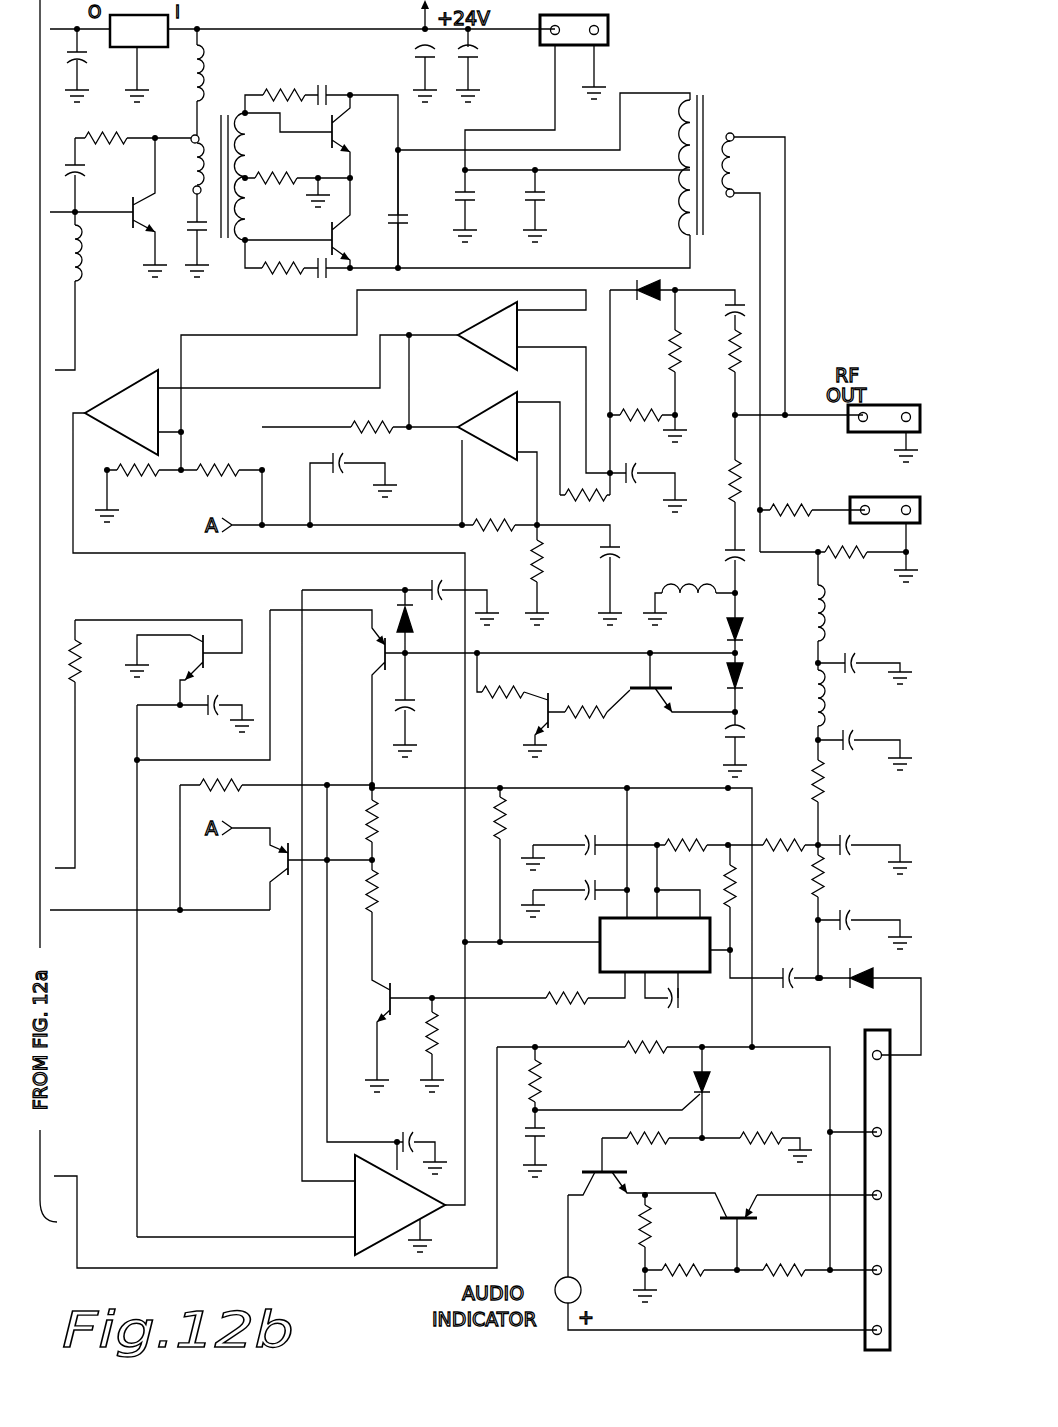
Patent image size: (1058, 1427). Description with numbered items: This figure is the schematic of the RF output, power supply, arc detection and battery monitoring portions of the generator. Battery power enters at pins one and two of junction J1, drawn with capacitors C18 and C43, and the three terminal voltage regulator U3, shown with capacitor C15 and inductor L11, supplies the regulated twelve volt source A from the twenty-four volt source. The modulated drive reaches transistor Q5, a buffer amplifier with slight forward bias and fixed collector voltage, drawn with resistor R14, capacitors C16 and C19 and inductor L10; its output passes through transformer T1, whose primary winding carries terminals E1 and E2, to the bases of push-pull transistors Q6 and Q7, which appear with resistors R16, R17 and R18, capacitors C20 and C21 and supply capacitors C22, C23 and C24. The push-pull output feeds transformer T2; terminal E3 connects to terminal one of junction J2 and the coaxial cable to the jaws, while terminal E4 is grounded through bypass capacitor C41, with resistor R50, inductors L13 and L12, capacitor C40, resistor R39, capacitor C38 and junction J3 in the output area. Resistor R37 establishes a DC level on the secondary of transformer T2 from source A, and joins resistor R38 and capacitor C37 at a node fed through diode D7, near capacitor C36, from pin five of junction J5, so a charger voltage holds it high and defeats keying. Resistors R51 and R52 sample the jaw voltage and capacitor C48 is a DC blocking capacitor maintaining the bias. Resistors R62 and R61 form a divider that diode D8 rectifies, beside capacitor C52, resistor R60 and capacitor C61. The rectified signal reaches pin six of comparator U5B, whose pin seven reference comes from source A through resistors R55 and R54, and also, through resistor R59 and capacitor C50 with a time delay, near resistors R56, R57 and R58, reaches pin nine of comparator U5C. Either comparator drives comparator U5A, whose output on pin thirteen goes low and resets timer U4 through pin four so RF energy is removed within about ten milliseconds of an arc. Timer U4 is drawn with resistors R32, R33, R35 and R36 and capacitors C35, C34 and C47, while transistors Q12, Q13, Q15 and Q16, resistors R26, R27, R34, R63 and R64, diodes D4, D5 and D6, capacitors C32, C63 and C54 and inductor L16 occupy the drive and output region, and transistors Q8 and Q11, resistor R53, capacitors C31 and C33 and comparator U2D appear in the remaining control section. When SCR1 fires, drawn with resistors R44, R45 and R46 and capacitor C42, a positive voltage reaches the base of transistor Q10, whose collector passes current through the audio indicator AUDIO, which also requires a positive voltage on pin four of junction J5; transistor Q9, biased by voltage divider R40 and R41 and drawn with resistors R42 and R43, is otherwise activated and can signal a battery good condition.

The three terminal voltage regulator U3 is at (139, 31).
The capacitor C15 is at (96, 64).
The inductor L11 is at (184, 73).
The resistor R14 is at (106, 128).
The capacitor C16 is at (94, 171).
The transistor Q5 is at (151, 212).
The inductor L10 is at (102, 253).
The transformer T1 is at (218, 165).
The terminal E1 is at (178, 128).
The terminal E2 is at (178, 180).
The capacitor C19 is at (213, 244).
The resistor R16 is at (284, 84).
The capacitor C20 is at (328, 85).
The resistor R17 is at (276, 168).
The resistor R18 is at (281, 280).
The capacitor C21 is at (326, 278).
The transistor Q6 is at (354, 131).
The transistor Q7 is at (354, 238).
The capacitor C22 is at (414, 234).
The capacitor C18 is at (405, 51).
The capacitor C43 is at (417, 266).
The junction J1 is at (586, 43).
The capacitor C23 is at (446, 189).
The capacitor C24 is at (554, 189).
The transformer T2 is at (706, 155).
The terminal E3 is at (738, 123).
The terminal E4 is at (737, 211).
The diode D8 is at (645, 307).
The capacitor C52 is at (713, 319).
The resistor R61 is at (657, 351).
The resistor R62 is at (713, 351).
The resistor R60 is at (643, 404).
The capacitor C61 is at (630, 462).
The resistor R52 is at (713, 481).
The DC blocking capacitor C48 is at (711, 555).
The inductor L16 is at (689, 605).
The diode D5 is at (715, 635).
The diode D6 is at (715, 681).
The capacitor C54 is at (715, 739).
The resistor R59 is at (586, 509).
The comparator U5B is at (485, 328).
The comparator U5C is at (483, 433).
The comparator U5A is at (122, 409).
The resistor R56 is at (372, 416).
The resistor R57 is at (495, 515).
The resistor R58 is at (512, 561).
The capacitor C50 is at (586, 559).
The resistor R54 is at (138, 483).
The resistor R55 is at (218, 483).
The junction J2 is at (879, 420).
The connector J3 is at (879, 513).
The resistor R50 is at (791, 498).
The resistor R41 is at (764, 925).
The inductor L13 is at (846, 613).
The capacitor C40 is at (871, 655).
The inductor L12 is at (846, 698).
The bypass capacitor C41 is at (870, 733).
The resistor R39 is at (839, 781).
The capacitor C38 is at (848, 836).
The resistor R37 is at (782, 860).
The resistor R38 is at (839, 876).
The capacitor C37 is at (846, 936).
The capacitor C36 is at (788, 987).
The diode D7 is at (878, 987).
The junction J5 is at (878, 1177).
The capacitor C32 is at (413, 581).
The diode D4 is at (421, 616).
The transistor Q12 is at (359, 654).
The capacitor C63 is at (425, 721).
The resistor R63 is at (503, 681).
The transistor Q15 is at (523, 715).
The resistor R64 is at (586, 725).
The transistor Q16 is at (635, 679).
The resistor R26 is at (391, 821).
The resistor R27 is at (391, 891).
The resistor R32 is at (520, 818).
The capacitor C35 is at (595, 838).
The capacitor C34 is at (576, 900).
The timer U4 is at (657, 946).
The resistor R35 is at (687, 830).
The resistor R36 is at (706, 886).
The capacitor C47 is at (697, 1006).
The resistor R33 is at (566, 1010).
The transistor Q13 is at (366, 999).
The resistor R34 is at (410, 1034).
The resistor R44 is at (646, 1061).
The resistor R45 is at (556, 1081).
The capacitor C42 is at (554, 1145).
The SCR SCR1 is at (721, 1086).
The resistor R46 is at (648, 1151).
The resistor R43 is at (761, 1151).
The transistor Q10 is at (604, 1196).
The transistor Q9 is at (738, 1196).
The resistor R42 is at (666, 1226).
The resistor R40 is at (785, 1284).
The resistor R53 is at (95, 651).
The transistor Q11 is at (180, 651).
The capacitor C31 is at (192, 710).
The resistor R51 is at (221, 799).
The transistor Q8 is at (265, 859).
The capacitor C33 is at (403, 1132).
The operational amplifier U2/D U2D is at (399, 1201).
The audio indicator AUDIO is at (568, 1290).